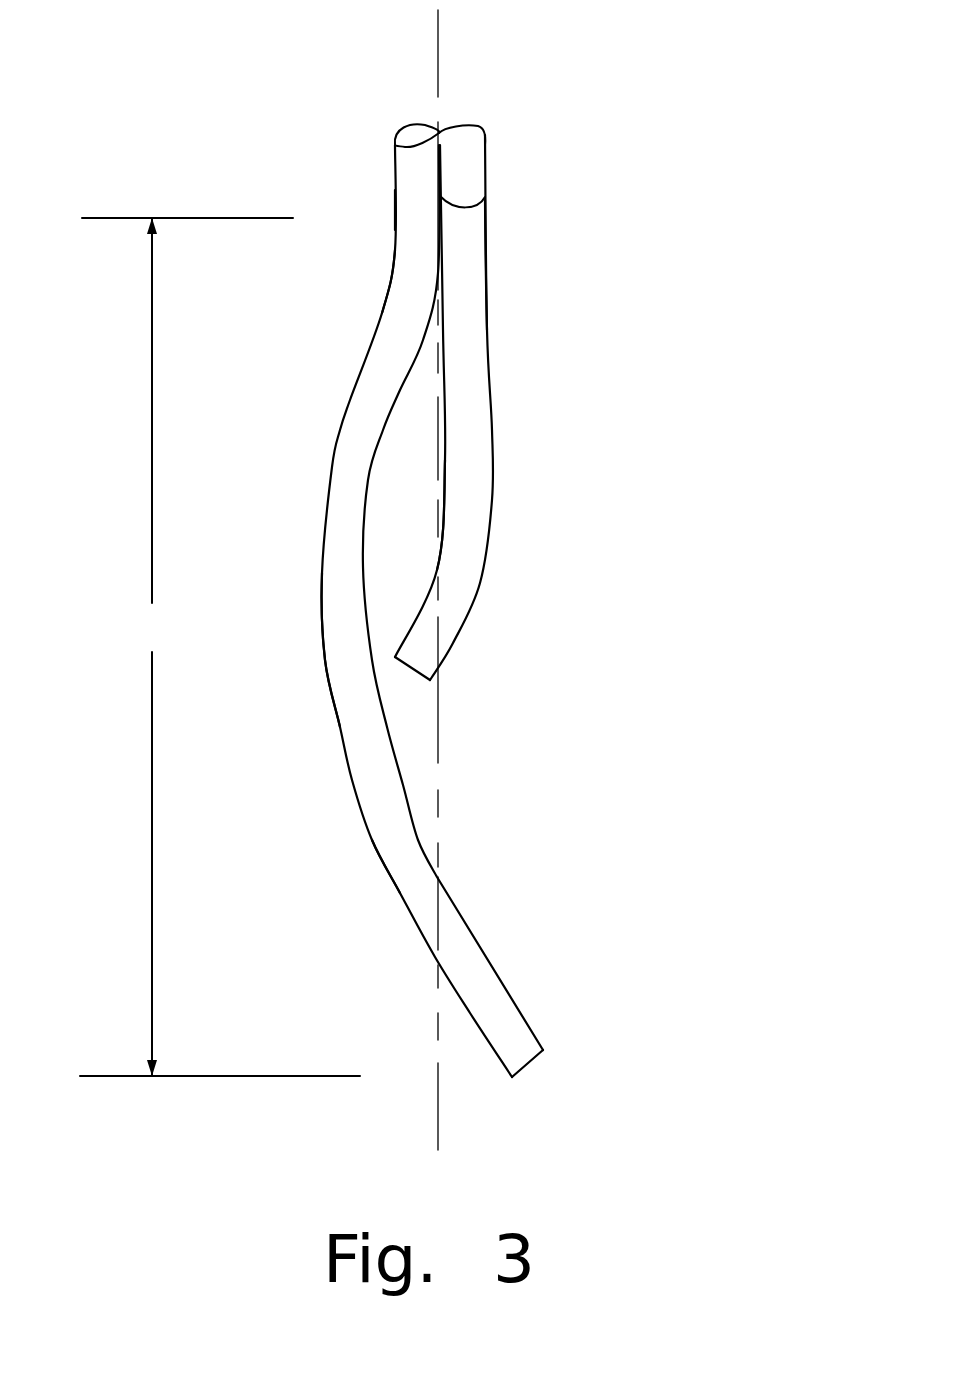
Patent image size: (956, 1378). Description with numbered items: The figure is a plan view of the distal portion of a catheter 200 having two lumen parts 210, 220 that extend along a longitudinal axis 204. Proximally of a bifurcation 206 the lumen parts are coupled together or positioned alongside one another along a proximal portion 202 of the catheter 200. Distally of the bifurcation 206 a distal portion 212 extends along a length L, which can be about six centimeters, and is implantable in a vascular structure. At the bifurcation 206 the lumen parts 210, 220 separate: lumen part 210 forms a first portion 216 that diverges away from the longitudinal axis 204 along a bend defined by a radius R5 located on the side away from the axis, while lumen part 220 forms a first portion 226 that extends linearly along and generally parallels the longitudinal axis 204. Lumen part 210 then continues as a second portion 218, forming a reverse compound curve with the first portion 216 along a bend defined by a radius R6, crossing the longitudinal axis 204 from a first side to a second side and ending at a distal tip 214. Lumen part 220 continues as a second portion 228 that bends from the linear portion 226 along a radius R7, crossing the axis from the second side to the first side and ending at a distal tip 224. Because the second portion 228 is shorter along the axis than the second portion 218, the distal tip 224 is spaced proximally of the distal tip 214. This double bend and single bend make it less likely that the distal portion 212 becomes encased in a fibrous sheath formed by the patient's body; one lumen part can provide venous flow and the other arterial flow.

The catheter 200 is at (270, 97).
The proximal portion 202 is at (500, 122).
The longitudinal axis 204 is at (435, 1022).
The bifurcation 206 is at (485, 197).
The lumen part 210 is at (387, 165).
The distal portion 212 is at (355, 833).
The distal tip 214 is at (520, 1033).
The first portion 216 is at (408, 245).
The second portion 218 is at (347, 703).
The lumen part 220 is at (473, 157).
The distal tip 224 is at (420, 665).
The first portion 226 is at (485, 247).
The second portion 228 is at (482, 515).
The radius R5 is at (397, 210).
The radius R6 is at (438, 530).
The radius R7 is at (428, 593).
The length L is at (220, 647).